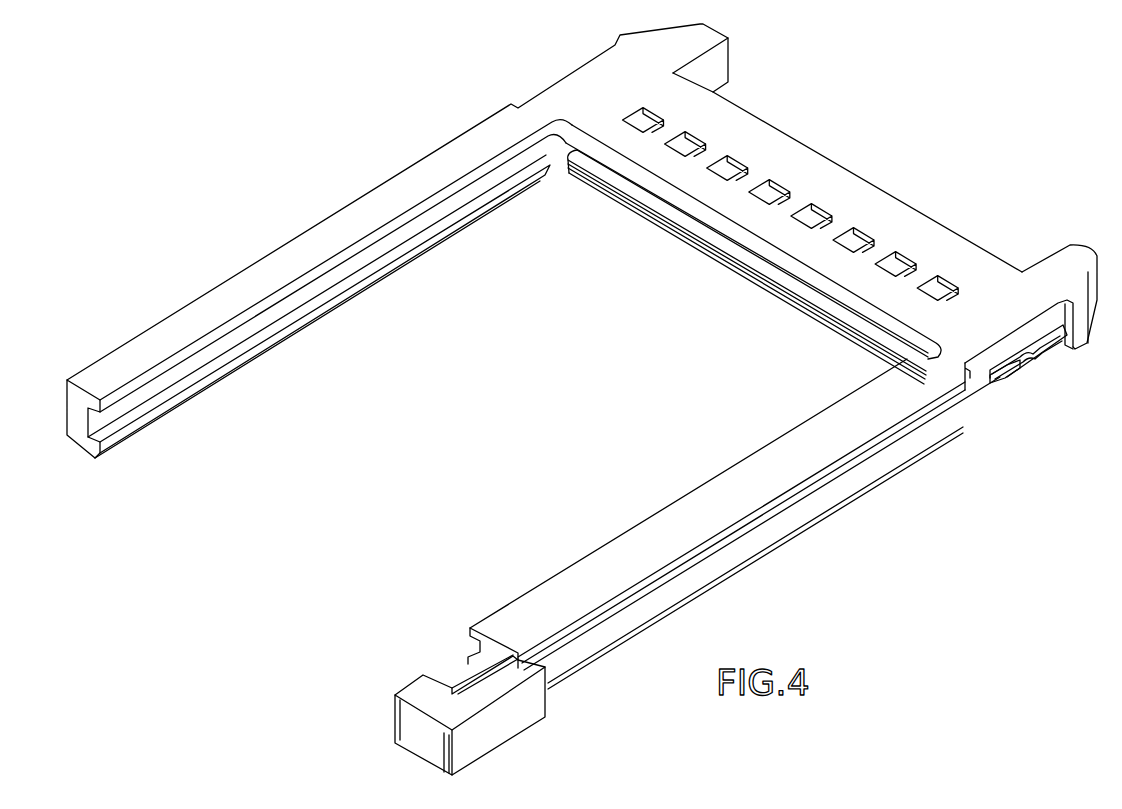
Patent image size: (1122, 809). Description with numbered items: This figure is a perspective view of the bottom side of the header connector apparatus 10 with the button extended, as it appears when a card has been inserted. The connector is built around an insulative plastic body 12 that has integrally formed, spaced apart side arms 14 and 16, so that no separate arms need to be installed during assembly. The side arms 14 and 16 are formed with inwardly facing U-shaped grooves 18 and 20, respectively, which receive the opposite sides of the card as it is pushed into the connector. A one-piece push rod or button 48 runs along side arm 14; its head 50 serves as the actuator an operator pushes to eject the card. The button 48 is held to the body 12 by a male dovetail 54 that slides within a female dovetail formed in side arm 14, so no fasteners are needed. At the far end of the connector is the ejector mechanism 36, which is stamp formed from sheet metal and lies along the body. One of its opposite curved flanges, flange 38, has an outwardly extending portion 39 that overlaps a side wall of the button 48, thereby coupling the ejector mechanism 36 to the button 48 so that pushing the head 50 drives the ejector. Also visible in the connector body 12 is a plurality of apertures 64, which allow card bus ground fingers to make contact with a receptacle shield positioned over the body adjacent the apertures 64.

The header connector apparatus 10 is at (582, 399).
The insulative plastic body 12 is at (810, 237).
The side arm 14 is at (697, 567).
The side arm 16 is at (397, 241).
The U-shaped groove 18 is at (470, 645).
The U-shaped groove 20 is at (232, 340).
The ejector mechanism 36 is at (734, 236).
The curved flange 38 is at (1008, 380).
The outwardly extending portion 39 is at (1024, 372).
The push rod or button 48 is at (830, 504).
The head 50 is at (469, 696).
The male dovetail 54 is at (455, 680).
The apertures 64 is at (855, 232).